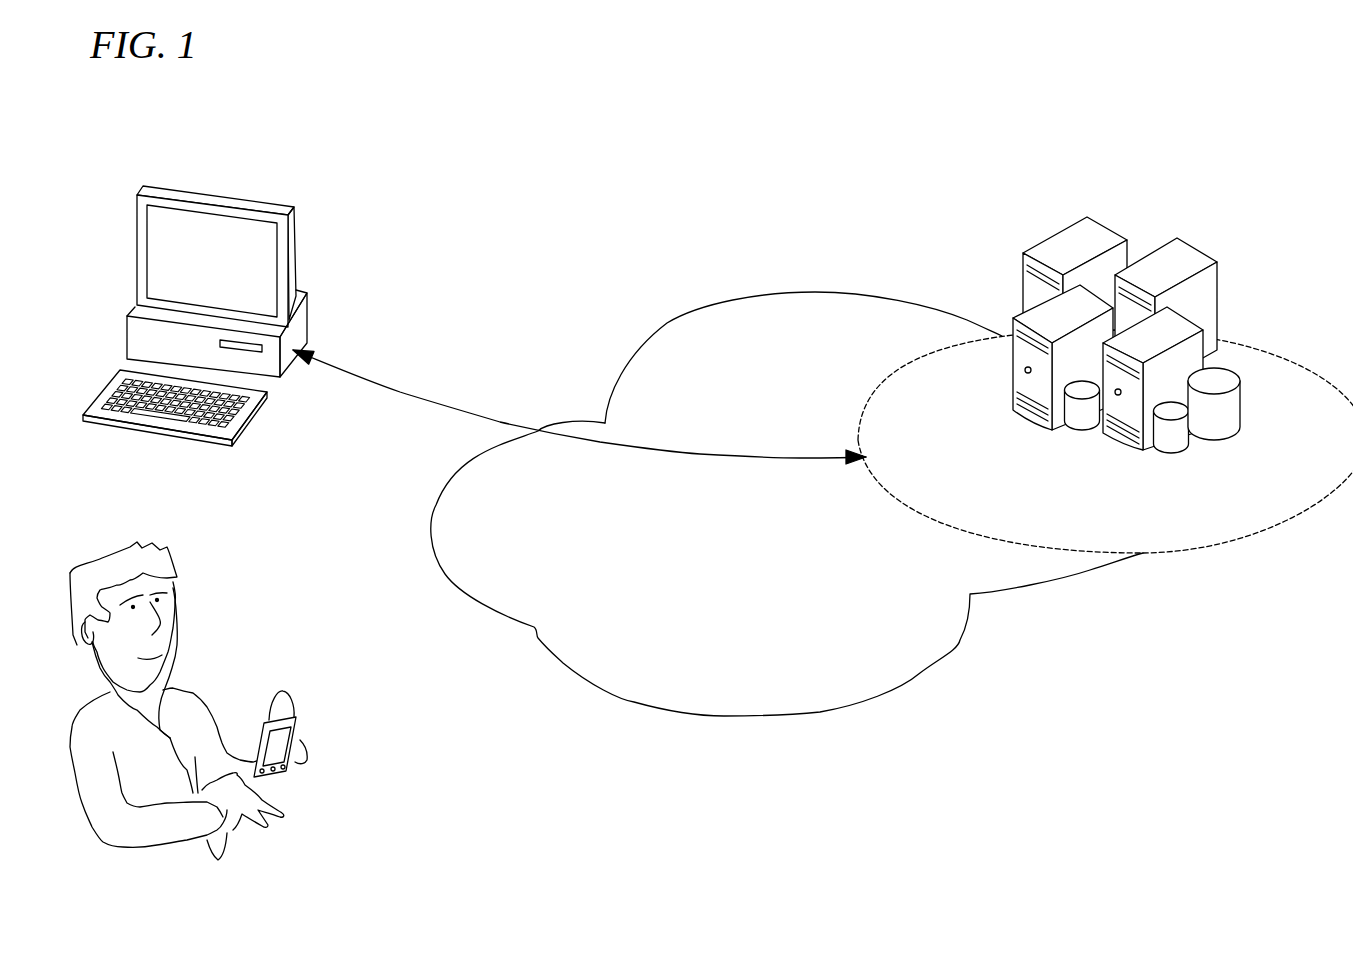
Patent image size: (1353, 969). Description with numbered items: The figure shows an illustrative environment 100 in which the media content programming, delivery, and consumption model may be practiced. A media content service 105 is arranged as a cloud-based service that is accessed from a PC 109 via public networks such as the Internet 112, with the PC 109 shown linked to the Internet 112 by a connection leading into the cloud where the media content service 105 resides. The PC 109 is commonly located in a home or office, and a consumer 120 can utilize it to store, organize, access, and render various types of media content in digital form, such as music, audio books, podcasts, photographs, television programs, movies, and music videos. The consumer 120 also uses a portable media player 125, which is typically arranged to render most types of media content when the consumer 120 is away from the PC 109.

The illustrative environment 100 is at (578, 171).
The media content service 105 is at (1264, 346).
The PC 109 is at (262, 201).
The Internet 112 is at (797, 293).
The consumer 120 is at (237, 600).
The portable media player 125 is at (277, 747).